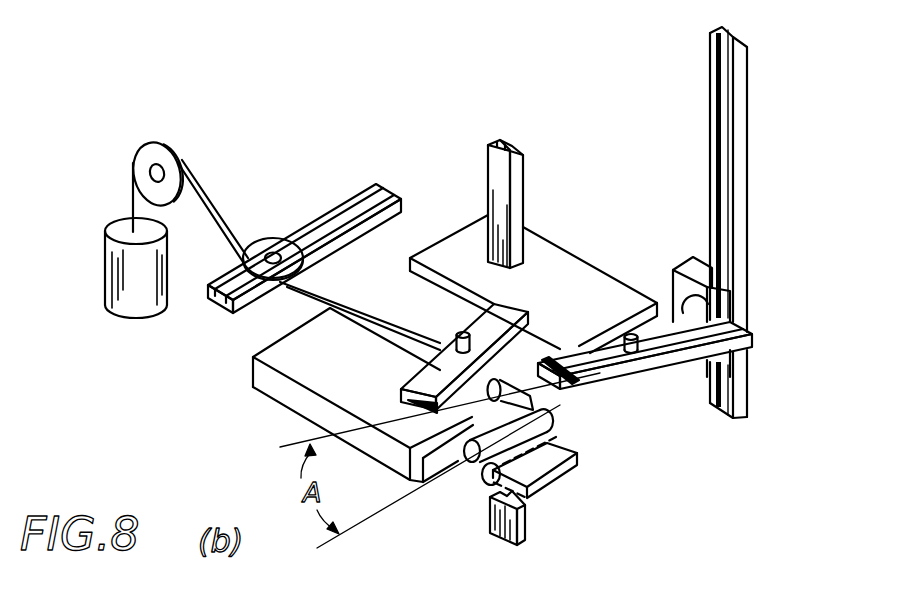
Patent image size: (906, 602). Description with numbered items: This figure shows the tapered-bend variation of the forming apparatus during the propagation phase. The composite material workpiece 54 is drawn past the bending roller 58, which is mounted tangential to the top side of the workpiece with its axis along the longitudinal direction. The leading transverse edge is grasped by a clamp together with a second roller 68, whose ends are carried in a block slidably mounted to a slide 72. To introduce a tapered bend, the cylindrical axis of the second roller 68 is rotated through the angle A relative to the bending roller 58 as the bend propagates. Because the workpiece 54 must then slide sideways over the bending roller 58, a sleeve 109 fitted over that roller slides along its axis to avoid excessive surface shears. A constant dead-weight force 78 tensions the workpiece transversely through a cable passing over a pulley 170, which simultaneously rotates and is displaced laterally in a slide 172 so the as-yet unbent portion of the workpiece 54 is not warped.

The composite material workpiece 54 is at (573, 326).
The bending roller 58 is at (466, 460).
The second roller 68 is at (489, 378).
The slide 72 is at (522, 163).
The force 78 is at (310, 311).
The sleeve 109 is at (557, 413).
The pulley 170 is at (272, 247).
The slide 172 is at (342, 206).